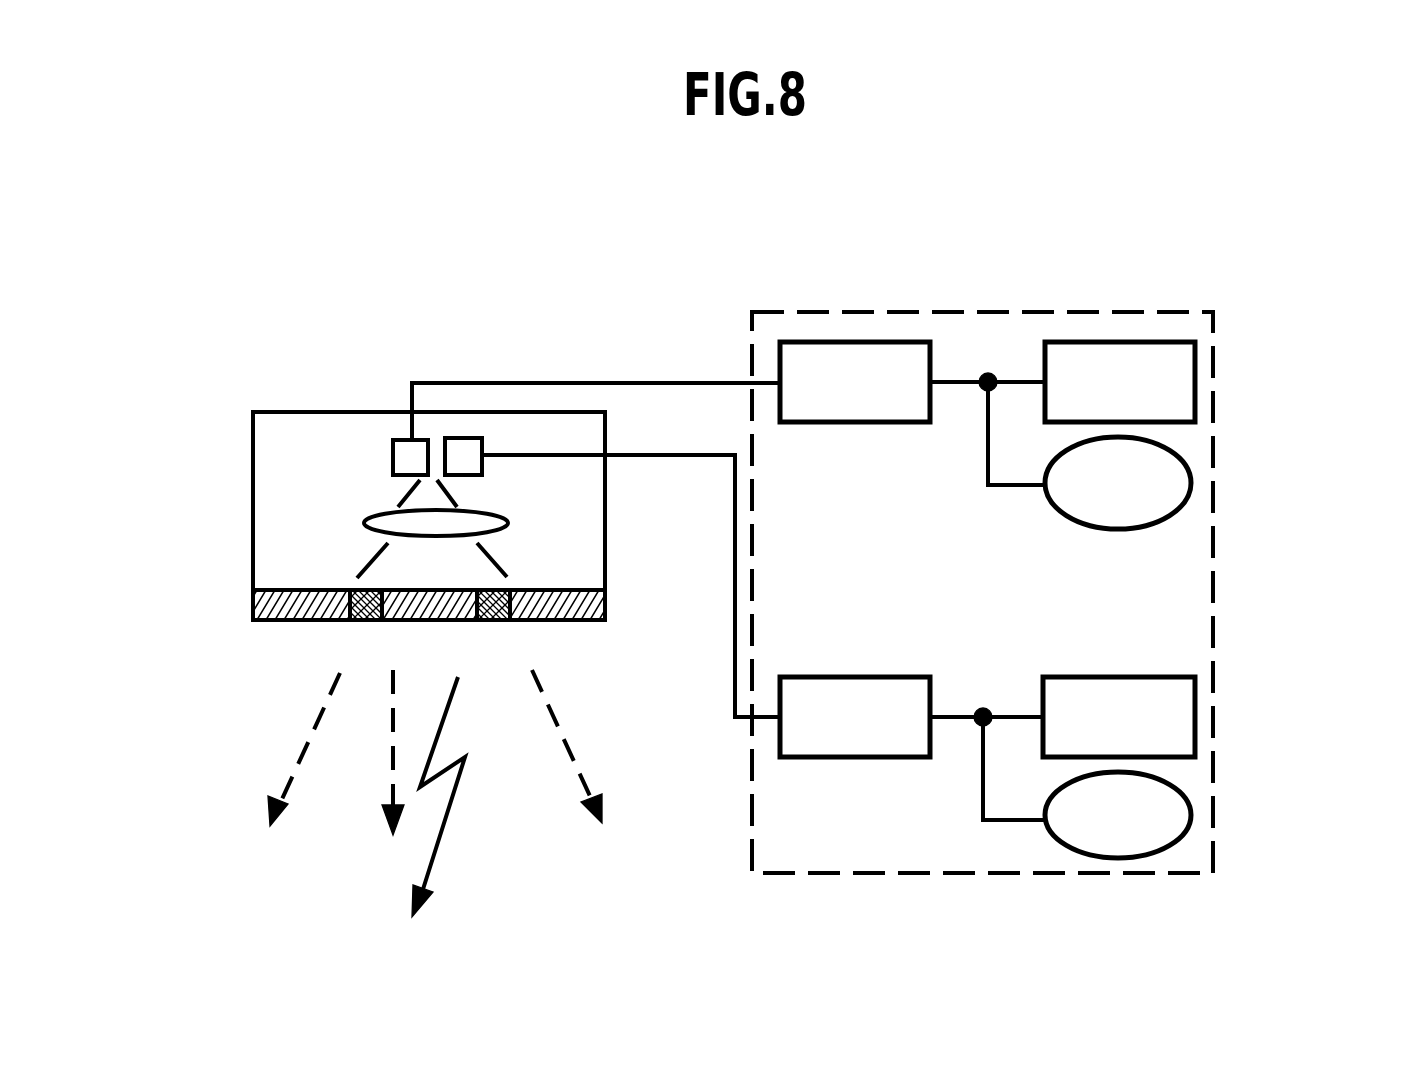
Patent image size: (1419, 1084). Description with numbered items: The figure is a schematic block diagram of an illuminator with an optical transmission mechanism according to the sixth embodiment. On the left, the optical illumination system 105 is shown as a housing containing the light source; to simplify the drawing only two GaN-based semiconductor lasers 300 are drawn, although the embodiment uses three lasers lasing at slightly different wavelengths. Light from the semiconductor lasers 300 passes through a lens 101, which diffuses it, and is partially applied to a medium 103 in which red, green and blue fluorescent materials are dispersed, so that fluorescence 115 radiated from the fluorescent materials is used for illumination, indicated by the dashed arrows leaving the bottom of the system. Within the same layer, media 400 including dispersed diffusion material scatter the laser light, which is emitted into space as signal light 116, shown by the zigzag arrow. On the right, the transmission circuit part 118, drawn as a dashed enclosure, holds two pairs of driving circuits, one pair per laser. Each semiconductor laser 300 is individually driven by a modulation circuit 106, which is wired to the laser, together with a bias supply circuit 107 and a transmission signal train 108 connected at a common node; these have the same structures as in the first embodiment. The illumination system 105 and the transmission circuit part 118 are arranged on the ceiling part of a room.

The optical illumination system 105 is at (241, 465).
The GaN-based semiconductor laser 300 is at (460, 468).
The lens 101 is at (425, 520).
The medium 103 is at (330, 598).
The media including dispersed diffusion material 400 is at (496, 609).
The fluorescence 115 is at (300, 735).
The signal light 116 is at (410, 865).
The modulation circuit 106 is at (855, 549).
The bias supply circuit 107 is at (1119, 549).
The transmission signal train 108 is at (1118, 647).
The transmission circuit part 118 is at (1228, 550).